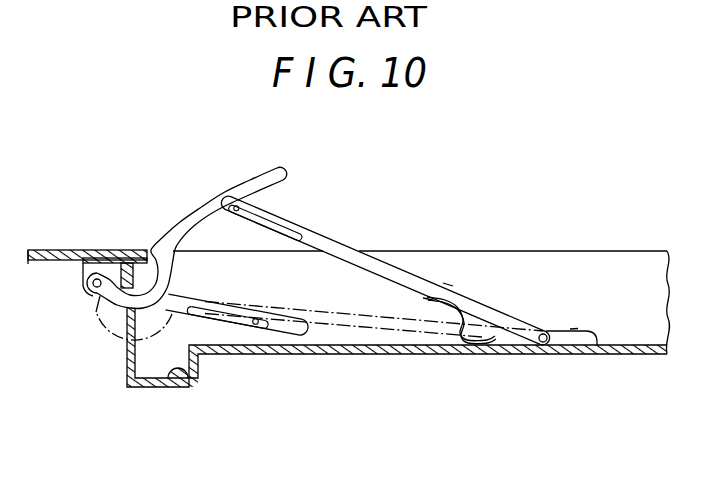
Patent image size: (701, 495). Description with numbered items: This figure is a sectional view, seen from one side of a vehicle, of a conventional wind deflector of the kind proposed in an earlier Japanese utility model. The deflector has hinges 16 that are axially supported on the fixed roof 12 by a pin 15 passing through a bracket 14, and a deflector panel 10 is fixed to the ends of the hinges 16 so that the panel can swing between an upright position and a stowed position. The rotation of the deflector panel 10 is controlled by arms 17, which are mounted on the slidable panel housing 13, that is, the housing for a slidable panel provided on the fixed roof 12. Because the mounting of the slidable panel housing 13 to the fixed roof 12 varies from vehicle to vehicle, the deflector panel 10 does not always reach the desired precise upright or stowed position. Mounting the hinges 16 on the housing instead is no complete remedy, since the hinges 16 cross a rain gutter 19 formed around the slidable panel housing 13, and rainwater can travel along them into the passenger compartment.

The deflector panel 10 is at (178, 222).
The fixed roof 12 is at (53, 250).
The slidable panel housing 13 is at (226, 354).
The bracket 14 is at (82, 282).
The pin 15 is at (91, 292).
The hinge 16 is at (115, 309).
The arm 17 is at (338, 241).
The rain gutter 19 is at (164, 378).